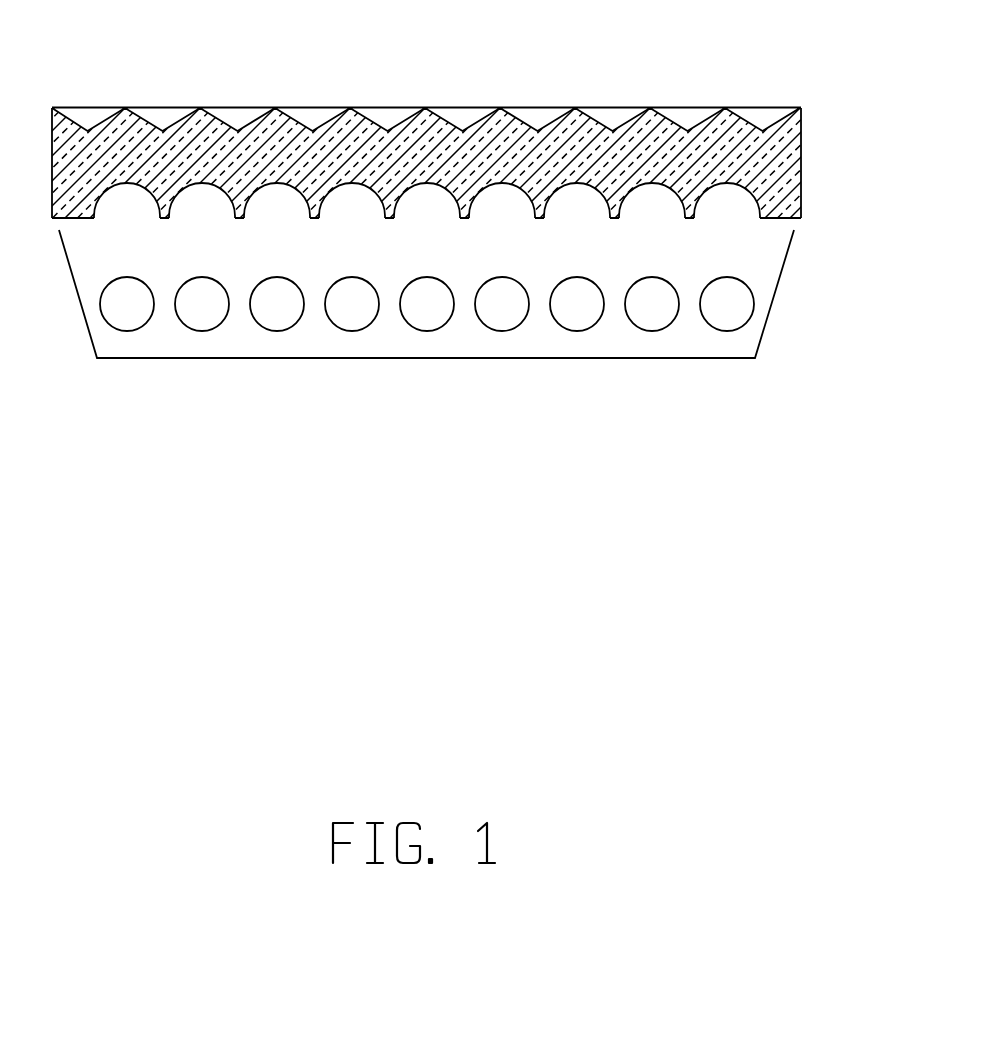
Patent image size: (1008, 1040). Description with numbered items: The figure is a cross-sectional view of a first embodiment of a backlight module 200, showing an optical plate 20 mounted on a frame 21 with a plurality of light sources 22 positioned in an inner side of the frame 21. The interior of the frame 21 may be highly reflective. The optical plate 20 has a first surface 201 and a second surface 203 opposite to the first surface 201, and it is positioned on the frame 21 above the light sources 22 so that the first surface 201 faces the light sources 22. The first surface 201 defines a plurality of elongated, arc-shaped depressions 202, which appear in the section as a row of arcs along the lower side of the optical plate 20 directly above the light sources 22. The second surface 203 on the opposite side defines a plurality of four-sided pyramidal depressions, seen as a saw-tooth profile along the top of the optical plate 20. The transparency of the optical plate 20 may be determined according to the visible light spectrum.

The backlight module 200 is at (429, 52).
The optical plate 20 is at (450, 186).
The second surface 203 is at (619, 98).
The first surface 201 is at (775, 230).
The arc-shaped depressions 202 is at (652, 206).
The frame 21 is at (765, 334).
The light sources 22 is at (652, 316).